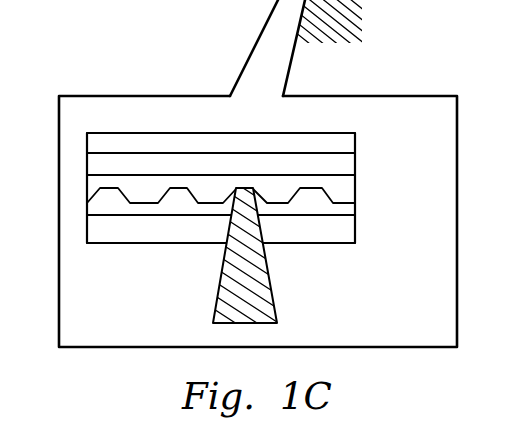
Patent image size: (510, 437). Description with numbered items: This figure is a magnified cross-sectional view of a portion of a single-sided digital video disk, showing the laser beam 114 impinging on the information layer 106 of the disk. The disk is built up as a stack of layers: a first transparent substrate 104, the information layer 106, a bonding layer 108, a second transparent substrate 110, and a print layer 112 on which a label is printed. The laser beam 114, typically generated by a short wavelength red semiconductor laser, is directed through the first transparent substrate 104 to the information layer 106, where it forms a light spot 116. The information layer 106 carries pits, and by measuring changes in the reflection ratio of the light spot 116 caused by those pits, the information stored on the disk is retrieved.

The first transparent substrate 104 is at (108, 233).
The information layer 106 is at (344, 210).
The bonding layer 108 is at (345, 190).
The second transparent substrate 110 is at (342, 165).
The print layer 112 is at (263, 146).
The laser beam 114 is at (275, 307).
The light spot 116 is at (240, 231).